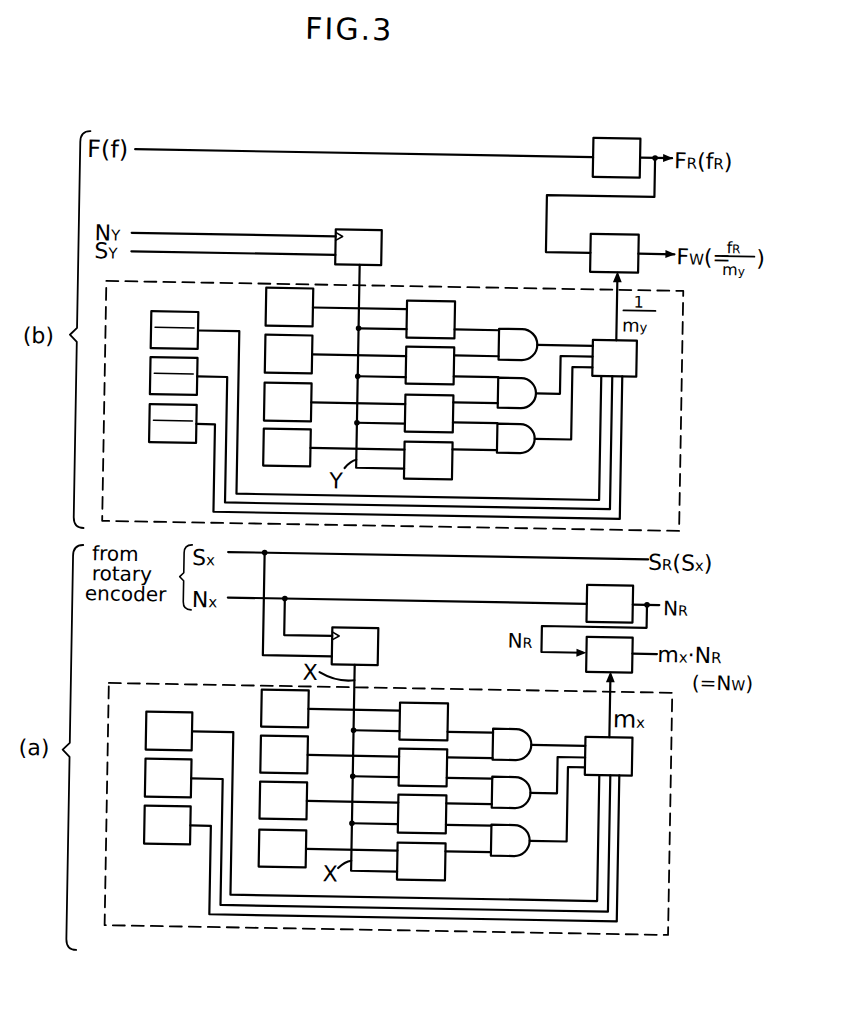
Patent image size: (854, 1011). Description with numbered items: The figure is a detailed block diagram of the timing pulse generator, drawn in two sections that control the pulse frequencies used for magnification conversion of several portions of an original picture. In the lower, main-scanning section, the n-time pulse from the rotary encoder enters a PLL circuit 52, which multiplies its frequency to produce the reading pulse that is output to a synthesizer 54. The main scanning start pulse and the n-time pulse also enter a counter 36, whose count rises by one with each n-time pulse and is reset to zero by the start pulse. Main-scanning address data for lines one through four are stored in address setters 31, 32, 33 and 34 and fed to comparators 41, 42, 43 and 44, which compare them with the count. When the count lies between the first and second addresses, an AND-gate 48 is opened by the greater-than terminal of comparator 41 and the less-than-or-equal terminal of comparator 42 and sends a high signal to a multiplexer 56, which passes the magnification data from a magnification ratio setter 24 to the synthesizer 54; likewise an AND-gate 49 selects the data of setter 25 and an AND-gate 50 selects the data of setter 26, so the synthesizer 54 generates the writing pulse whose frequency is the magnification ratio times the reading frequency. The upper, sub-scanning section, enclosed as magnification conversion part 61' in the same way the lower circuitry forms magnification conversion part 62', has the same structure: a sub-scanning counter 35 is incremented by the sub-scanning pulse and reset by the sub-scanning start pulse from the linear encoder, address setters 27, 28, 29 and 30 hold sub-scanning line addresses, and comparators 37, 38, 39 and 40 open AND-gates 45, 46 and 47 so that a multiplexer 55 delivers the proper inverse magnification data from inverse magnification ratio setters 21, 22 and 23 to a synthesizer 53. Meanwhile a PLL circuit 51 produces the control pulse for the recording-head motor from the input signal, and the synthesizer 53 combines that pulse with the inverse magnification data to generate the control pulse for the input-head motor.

The inverse magnification ratio setter 21 is at (148, 320).
The inverse magnification ratio setter 22 is at (148, 366).
The inverse magnification ratio setter 23 is at (148, 414).
The magnification ratio setter 24 is at (150, 723).
The magnification ratio setter 25 is at (150, 775).
The magnification ratio setter 26 is at (150, 822).
The address setter 27 is at (262, 308).
The address setter 28 is at (310, 365).
The address setter 29 is at (310, 413).
The address setter 30 is at (263, 448).
The address setter 31 is at (265, 706).
The address setter 32 is at (312, 754).
The address setter 33 is at (313, 799).
The address setter 34 is at (314, 847).
The sub-scanning counter 35 is at (377, 245).
The counter 36 is at (380, 636).
The comparator 37 is at (452, 309).
The comparator 38 is at (452, 369).
The comparator 39 is at (452, 412).
The comparator 40 is at (452, 460).
The comparator 41 is at (452, 711).
The comparator 42 is at (452, 762).
The comparator 43 is at (452, 817).
The comparator 44 is at (452, 865).
The AND-gate 45 is at (525, 328).
The AND-gate 46 is at (531, 404).
The AND-gate 47 is at (532, 449).
The AND-gate 48 is at (529, 728).
The AND-gate 49 is at (536, 805).
The AND-gate 50 is at (533, 851).
The PLL circuit 51 is at (614, 135).
The PLL circuit 52 is at (606, 581).
The synthesizer 53 is at (613, 231).
The synthesizer 54 is at (589, 661).
The multiplexer 55 is at (634, 352).
The multiplexer 56 is at (636, 758).
The magnification conversion part 61' is at (393, 384).
The magnification conversion part 62' is at (389, 793).